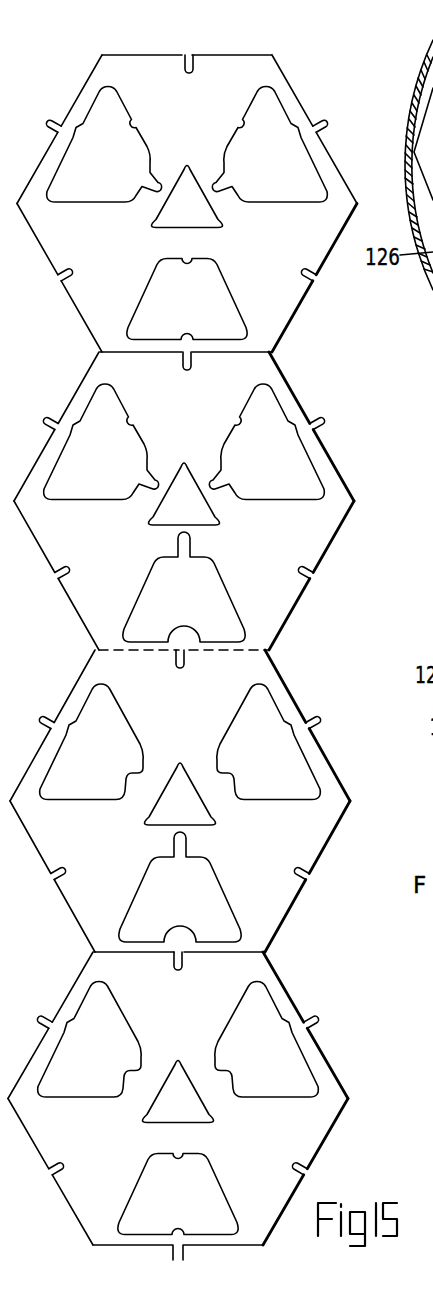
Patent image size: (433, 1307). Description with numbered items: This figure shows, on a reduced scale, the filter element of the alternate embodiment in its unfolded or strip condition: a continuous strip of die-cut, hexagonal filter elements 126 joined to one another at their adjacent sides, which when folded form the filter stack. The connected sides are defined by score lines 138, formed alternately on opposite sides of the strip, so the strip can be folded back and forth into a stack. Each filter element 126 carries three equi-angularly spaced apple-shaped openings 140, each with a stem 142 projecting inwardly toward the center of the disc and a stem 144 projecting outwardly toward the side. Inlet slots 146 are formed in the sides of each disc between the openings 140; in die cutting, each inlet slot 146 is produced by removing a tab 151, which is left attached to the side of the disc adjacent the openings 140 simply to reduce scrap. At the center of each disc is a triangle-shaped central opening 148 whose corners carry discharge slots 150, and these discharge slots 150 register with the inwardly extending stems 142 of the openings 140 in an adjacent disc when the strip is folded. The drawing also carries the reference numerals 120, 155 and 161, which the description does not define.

The container assembly 120 is at (432, 362).
The filter element 126 is at (299, 97).
The score line 138 is at (243, 352).
The apple-shaped opening 140 is at (183, 591).
The inwardly projecting stem 142 is at (150, 185).
The outwardly projecting stem 144 is at (186, 336).
The inlet slot 146 is at (195, 58).
The central opening 148 is at (185, 644).
The discharge slot 150 is at (150, 523).
The tab 151 is at (62, 122).
The curved wall 155 is at (432, 80).
The edge tab 161 is at (327, 426).